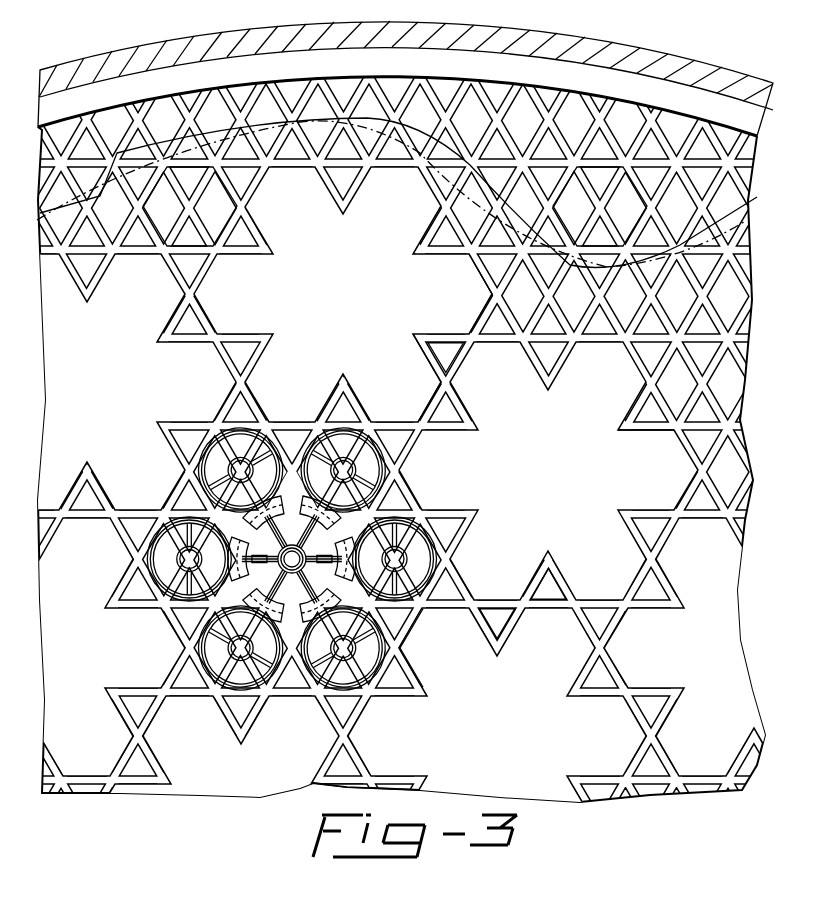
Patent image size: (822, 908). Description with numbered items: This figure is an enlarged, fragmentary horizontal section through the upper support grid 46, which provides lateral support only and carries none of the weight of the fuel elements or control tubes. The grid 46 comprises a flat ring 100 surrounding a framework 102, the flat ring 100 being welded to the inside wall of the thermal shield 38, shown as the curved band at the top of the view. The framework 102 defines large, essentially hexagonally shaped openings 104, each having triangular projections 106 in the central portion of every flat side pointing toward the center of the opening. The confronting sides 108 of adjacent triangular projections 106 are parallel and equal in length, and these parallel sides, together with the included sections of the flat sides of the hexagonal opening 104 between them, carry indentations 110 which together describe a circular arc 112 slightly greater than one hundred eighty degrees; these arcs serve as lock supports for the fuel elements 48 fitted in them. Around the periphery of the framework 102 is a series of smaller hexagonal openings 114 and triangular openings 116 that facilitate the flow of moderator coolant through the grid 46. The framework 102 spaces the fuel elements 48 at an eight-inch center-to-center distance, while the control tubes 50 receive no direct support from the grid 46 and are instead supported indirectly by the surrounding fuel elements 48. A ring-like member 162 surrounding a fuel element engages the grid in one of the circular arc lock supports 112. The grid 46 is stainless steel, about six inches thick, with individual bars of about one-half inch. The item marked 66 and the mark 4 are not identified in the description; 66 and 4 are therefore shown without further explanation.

The flat ring 100 is at (72, 104).
The thermal shield 38 is at (587, 44).
The framework 102 is at (588, 142).
The dashed boundary line 66 is at (358, 126).
The hexagonal opening 114 is at (212, 216).
The hexagonally shaped opening 104 is at (362, 300).
The triangular projection 106 is at (414, 297).
The confronting side 108 is at (344, 383).
The triangular opening 116 is at (540, 351).
The indentation 110 is at (402, 633).
The circular arc 112 is at (413, 668).
The fuel element 48 is at (322, 443).
The control tube 50 is at (208, 603).
The ring-like member 162 is at (402, 513).
The wall 4 is at (290, 555).
The upper support grid 46 is at (308, 780).